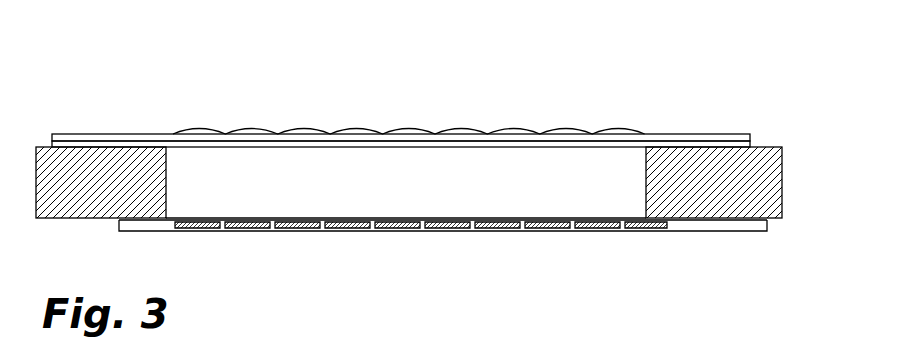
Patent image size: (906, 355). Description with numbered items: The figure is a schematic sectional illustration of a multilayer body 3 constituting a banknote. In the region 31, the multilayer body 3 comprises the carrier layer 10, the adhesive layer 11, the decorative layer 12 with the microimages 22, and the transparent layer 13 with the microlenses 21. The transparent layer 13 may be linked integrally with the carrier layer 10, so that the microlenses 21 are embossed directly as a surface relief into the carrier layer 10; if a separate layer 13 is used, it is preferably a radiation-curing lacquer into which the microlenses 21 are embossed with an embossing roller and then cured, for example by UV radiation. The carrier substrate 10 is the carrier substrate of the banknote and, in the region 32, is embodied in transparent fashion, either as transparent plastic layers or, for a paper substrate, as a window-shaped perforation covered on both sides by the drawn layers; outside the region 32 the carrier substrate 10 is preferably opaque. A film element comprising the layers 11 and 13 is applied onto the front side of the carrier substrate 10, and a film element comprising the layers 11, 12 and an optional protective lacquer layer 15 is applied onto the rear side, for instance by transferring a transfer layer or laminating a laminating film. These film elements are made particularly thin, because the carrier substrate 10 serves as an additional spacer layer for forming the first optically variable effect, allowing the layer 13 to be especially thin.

The multilayer body 3 is at (698, 98).
The carrier layer 10 is at (787, 181).
The adhesive layer 11 is at (753, 145).
The decorative layer 12 is at (170, 223).
The transparent layer 13 is at (751, 134).
The protective lacquer layer 15 is at (725, 232).
The microlenses 21 is at (232, 102).
The microimages 22 is at (550, 232).
The region 31 is at (432, 72).
The region 32 is at (622, 160).